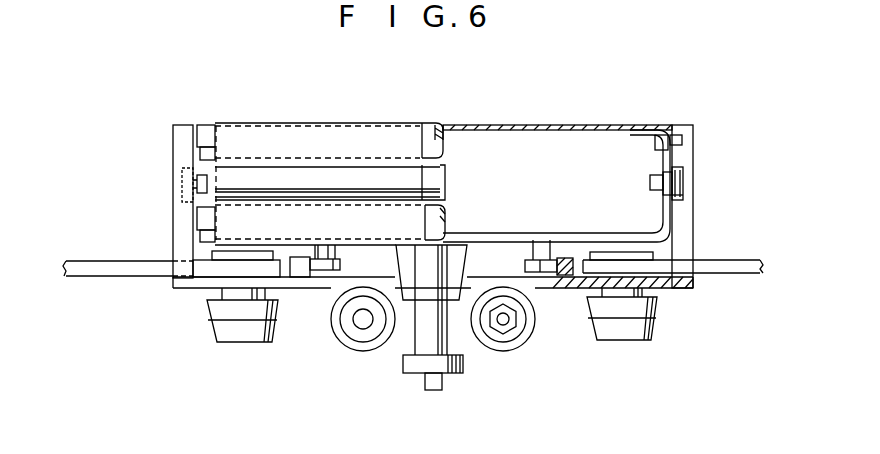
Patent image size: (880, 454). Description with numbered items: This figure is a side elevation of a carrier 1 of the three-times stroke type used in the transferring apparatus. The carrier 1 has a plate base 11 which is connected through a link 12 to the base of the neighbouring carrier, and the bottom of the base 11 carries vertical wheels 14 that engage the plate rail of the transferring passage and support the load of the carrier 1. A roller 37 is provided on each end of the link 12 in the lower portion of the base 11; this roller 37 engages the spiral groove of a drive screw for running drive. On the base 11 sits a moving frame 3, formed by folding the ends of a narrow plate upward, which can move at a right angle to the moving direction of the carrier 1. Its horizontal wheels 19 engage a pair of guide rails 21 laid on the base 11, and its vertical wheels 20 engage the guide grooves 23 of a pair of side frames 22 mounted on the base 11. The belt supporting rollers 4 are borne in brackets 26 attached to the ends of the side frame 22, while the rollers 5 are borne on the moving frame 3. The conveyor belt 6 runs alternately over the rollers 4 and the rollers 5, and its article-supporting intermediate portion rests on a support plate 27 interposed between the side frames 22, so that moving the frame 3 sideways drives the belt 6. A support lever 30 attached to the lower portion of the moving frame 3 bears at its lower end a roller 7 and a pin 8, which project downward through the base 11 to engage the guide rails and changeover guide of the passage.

The carrier 1 is at (630, 108).
The moving frame 3 is at (506, 232).
The belt supporting member 4 is at (206, 128).
The roller 5 is at (262, 178).
The conveyor belt 6 is at (350, 122).
The roller 7 is at (463, 374).
The pin 8 is at (435, 393).
The base 11 is at (178, 290).
The link 12 is at (78, 280).
The vertical wheel 14 is at (360, 352).
The horizontal wheel 19 is at (325, 272).
The vertical wheel 20 is at (180, 192).
The guide rail 21 is at (300, 280).
The side frame 22 is at (700, 141).
The guide groove 23 is at (683, 200).
The bracket 26 is at (175, 145).
The support plate 27 is at (550, 124).
The support lever 30 is at (412, 335).
The roller 37 is at (226, 345).